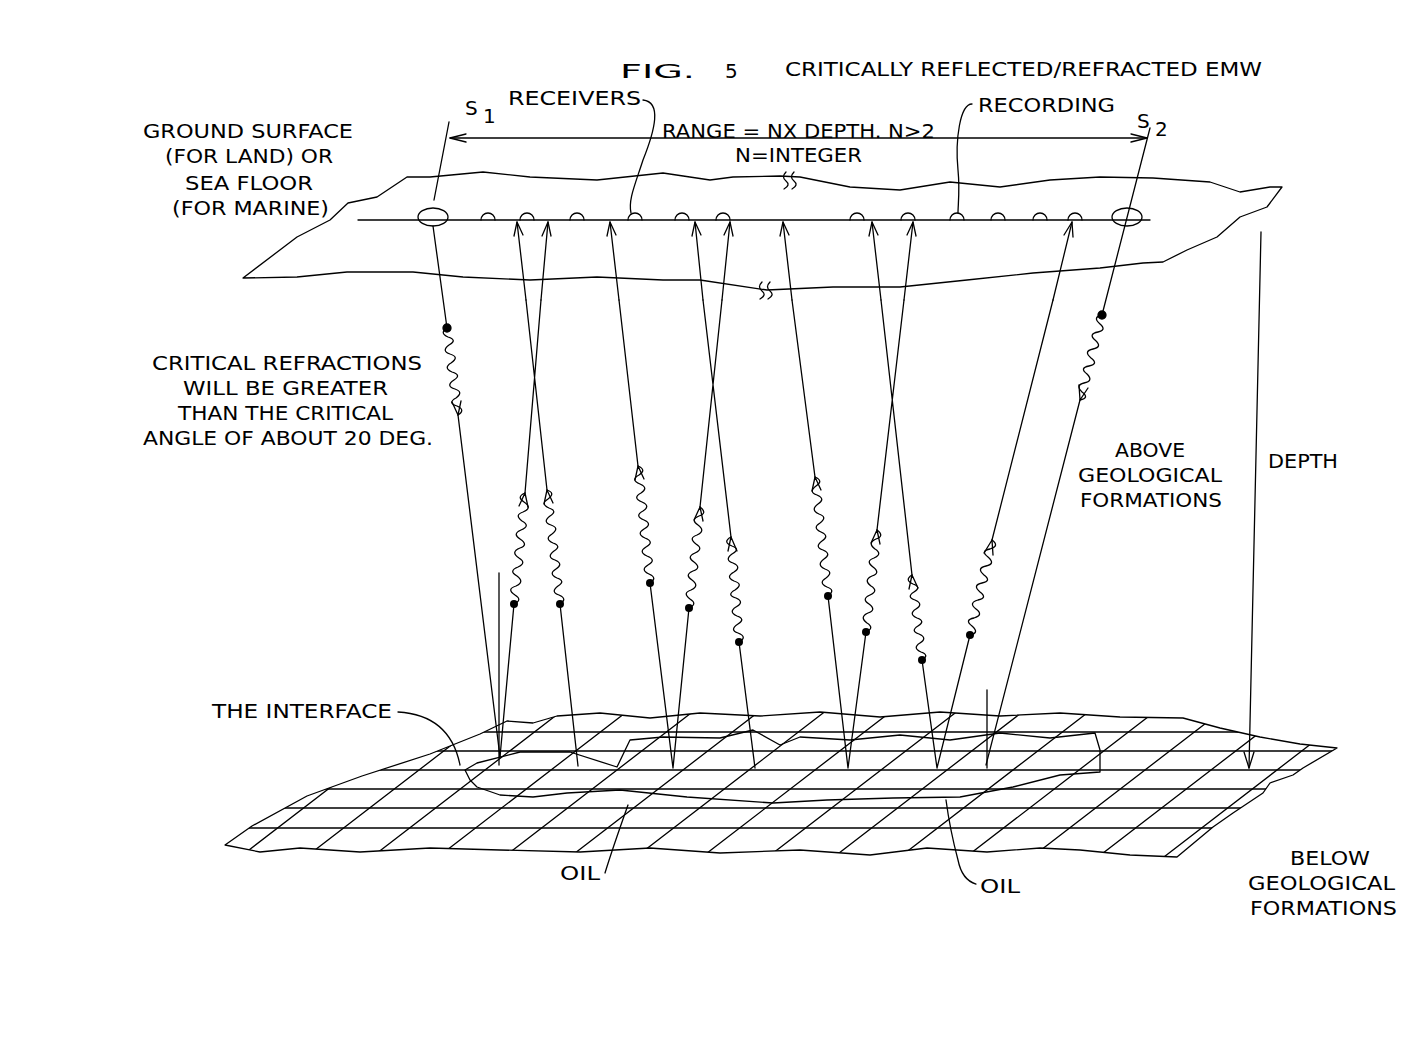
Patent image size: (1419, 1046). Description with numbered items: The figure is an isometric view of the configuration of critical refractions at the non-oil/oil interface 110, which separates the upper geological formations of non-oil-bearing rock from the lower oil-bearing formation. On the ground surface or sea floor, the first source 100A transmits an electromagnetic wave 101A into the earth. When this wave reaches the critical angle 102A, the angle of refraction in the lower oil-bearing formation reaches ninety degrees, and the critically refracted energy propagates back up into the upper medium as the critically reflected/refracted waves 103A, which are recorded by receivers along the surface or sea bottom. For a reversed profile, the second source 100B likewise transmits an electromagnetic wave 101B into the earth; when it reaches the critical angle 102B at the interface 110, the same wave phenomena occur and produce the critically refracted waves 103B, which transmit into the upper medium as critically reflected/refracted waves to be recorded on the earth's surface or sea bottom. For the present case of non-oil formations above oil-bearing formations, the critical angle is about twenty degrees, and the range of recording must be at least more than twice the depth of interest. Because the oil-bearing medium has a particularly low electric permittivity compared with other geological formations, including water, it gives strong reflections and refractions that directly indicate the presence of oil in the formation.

The source S1 100A is at (459, 203).
The source S2 100B is at (1161, 212).
The electromagnetic wave 101A is at (467, 491).
The electromagnetic wave 101B is at (1068, 446).
The critical angle 102A is at (505, 607).
The critical angle 102B is at (997, 687).
The critically reflected/refracted waves 103A is at (776, 529).
The critically refracted waves 103B is at (755, 267).
The non-oil/oil interface 110 is at (800, 780).